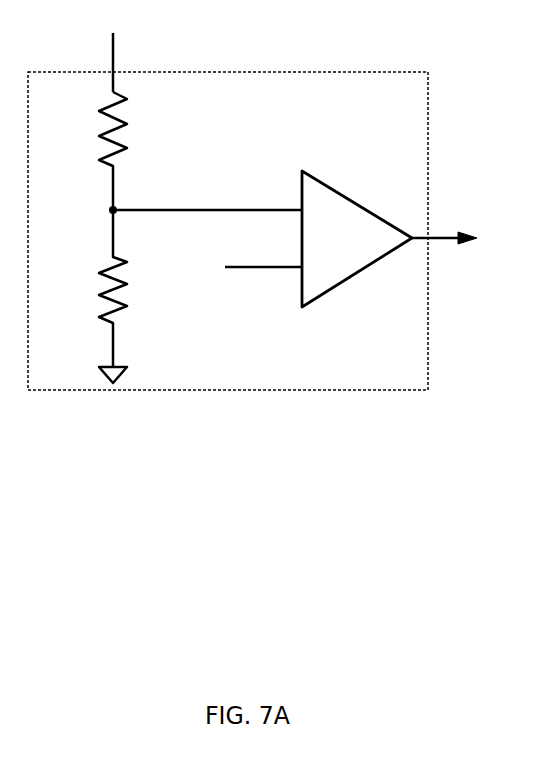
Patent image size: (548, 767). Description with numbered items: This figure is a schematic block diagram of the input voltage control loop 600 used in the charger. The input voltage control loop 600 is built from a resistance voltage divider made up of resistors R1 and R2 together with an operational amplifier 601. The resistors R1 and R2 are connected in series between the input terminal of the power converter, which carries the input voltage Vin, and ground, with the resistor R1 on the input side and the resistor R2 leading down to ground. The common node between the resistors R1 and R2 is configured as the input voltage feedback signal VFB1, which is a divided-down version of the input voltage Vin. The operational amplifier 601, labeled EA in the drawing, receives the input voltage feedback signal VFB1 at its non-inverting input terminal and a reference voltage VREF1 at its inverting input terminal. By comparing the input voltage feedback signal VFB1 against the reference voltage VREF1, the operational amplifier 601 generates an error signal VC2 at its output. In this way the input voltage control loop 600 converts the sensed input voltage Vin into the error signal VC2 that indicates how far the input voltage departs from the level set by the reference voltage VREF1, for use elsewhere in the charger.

The input voltage control loop 600 is at (266, 196).
The operational amplifier 601 is at (361, 217).
The resistor R1 is at (97, 151).
The resistor R2 is at (96, 288).
The input voltage Vin is at (69, 47).
The input voltage feedback signal VFB1 is at (207, 187).
The reference voltage VREF1 is at (240, 293).
The error signal VC2 is at (459, 215).
The error amplifier label EA is at (340, 237).